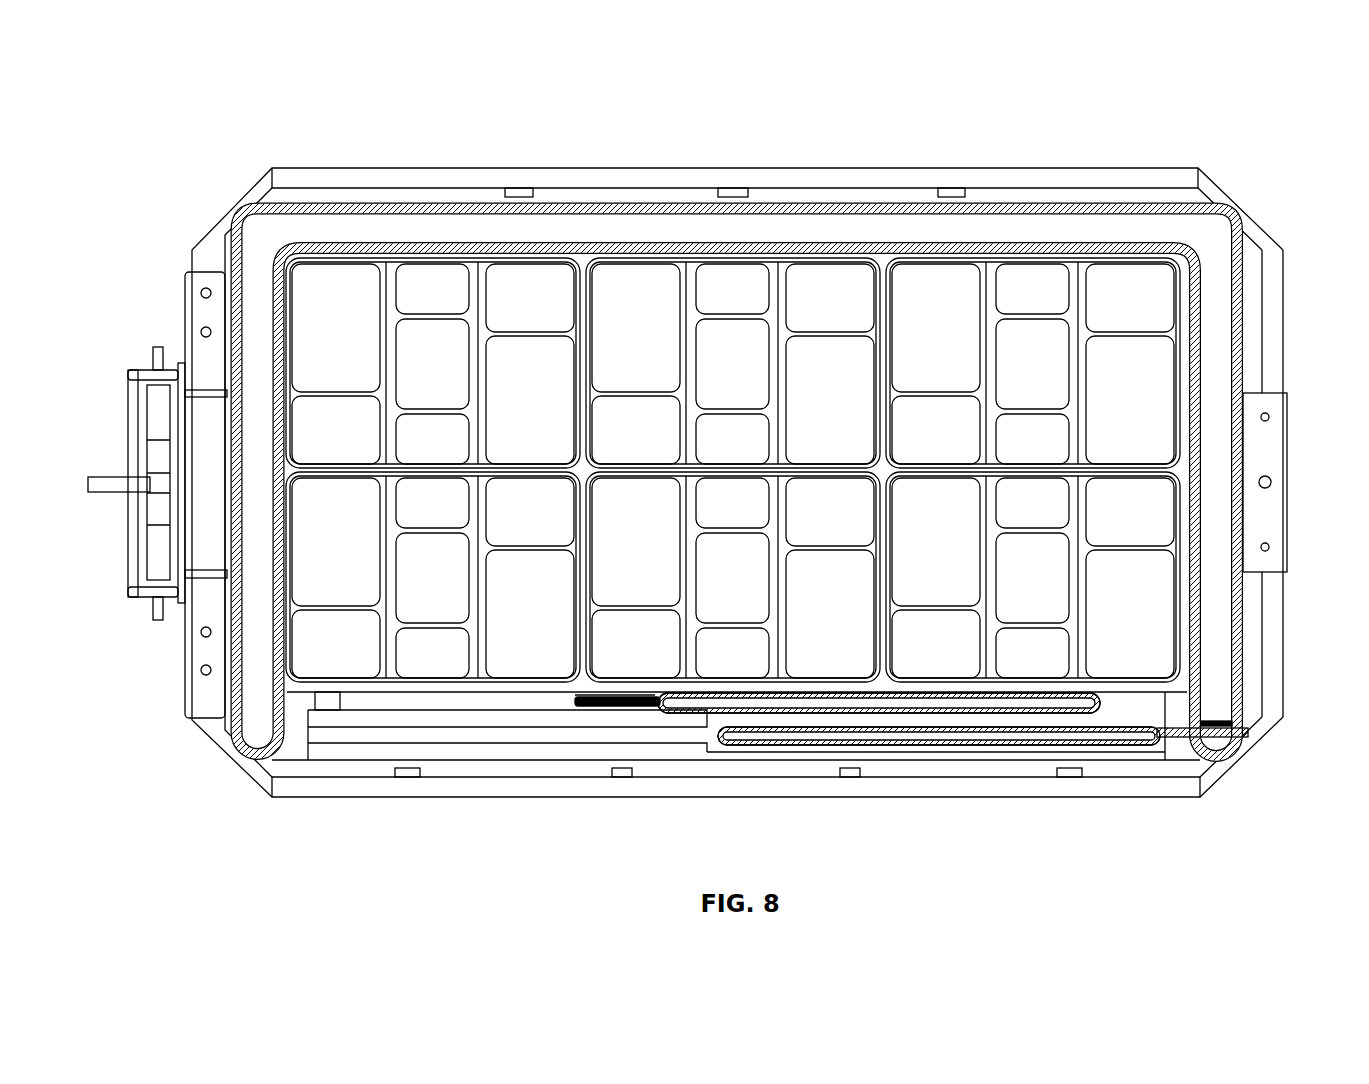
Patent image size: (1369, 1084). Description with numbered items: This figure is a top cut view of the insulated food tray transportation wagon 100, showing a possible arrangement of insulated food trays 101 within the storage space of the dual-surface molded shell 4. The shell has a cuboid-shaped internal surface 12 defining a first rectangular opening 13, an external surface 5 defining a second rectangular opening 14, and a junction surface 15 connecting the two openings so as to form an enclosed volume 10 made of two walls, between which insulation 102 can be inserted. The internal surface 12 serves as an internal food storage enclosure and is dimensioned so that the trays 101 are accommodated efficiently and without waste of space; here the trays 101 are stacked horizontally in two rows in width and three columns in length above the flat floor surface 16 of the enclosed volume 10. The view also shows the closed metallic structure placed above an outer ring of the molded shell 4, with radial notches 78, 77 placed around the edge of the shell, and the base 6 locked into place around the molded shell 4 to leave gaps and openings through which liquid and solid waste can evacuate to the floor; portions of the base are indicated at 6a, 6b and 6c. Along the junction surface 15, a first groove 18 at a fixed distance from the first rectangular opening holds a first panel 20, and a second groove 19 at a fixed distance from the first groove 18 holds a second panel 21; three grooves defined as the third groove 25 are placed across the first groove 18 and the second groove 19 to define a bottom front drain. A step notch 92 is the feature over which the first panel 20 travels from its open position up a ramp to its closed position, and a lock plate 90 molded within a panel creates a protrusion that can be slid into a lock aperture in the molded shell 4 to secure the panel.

The insulated food tray transportation wagon 100 is at (198, 112).
The insulation 102 is at (360, 216).
The trays 101 is at (556, 226).
The internal surface 12 is at (682, 243).
The radial notch 77 is at (950, 188).
The molded shell 4 is at (987, 203).
The external surface 5 is at (1082, 206).
The base 6 is at (1276, 358).
The side wall upper portion 6a is at (1276, 295).
The side wall lower portion 6b is at (1272, 590).
The mounting plate 6c is at (1268, 535).
The second rectangular opening 14 is at (1238, 700).
The lock plate 90 is at (1215, 748).
The junction surface 15 is at (1218, 755).
The first rectangular opening 13 is at (1193, 760).
The enclosed volume 10 is at (150, 598).
The step notch 92 is at (335, 694).
The floor surface 16 is at (433, 657).
The second groove 19 is at (530, 735).
The first groove 18 is at (627, 710).
The radial notch 78 is at (622, 778).
The third groove 25 is at (730, 747).
The second panel 21 is at (1015, 740).
The first panel 20 is at (1090, 706).